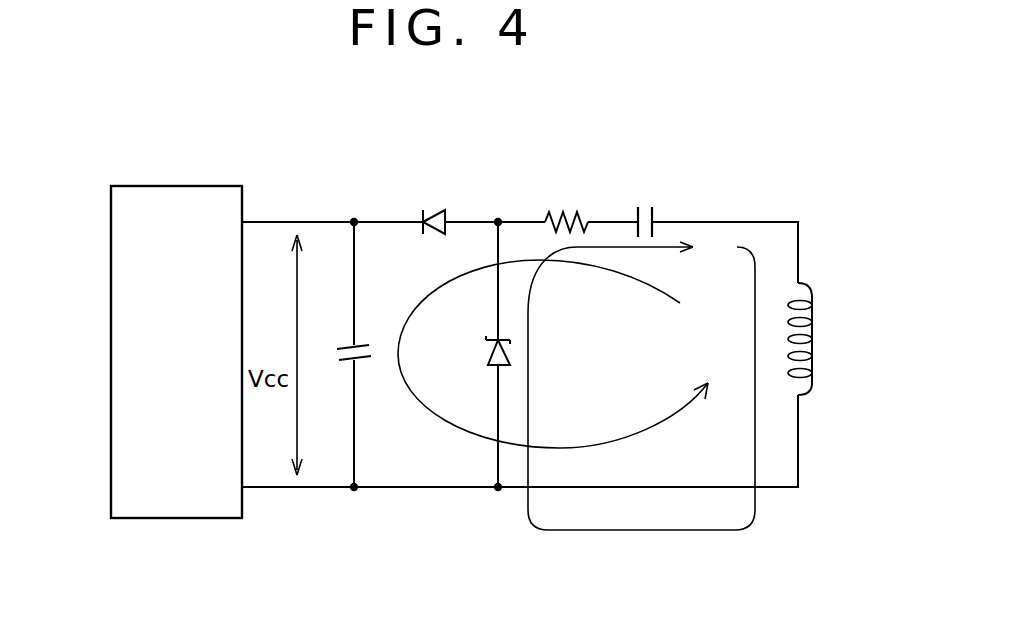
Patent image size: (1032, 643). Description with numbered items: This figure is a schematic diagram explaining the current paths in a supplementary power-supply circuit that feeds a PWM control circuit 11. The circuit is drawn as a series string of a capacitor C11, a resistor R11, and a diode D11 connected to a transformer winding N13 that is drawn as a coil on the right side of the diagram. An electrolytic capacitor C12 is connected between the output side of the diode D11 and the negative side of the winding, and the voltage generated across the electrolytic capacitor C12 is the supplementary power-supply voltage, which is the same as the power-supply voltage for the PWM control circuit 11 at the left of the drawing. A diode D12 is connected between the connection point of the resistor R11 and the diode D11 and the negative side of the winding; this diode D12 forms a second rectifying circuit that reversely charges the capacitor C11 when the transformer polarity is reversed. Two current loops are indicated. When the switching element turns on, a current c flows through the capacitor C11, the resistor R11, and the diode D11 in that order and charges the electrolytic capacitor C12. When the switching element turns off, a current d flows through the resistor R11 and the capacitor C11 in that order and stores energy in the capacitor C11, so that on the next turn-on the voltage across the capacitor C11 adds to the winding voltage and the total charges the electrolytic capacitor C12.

The PWM control circuit 11 is at (111, 305).
The electrolytic capacitor C12 is at (347, 346).
The diode D11 is at (436, 210).
The resistor R11 is at (566, 210).
The capacitor C11 is at (652, 205).
The diode D12 is at (486, 352).
The coil winding N13 is at (812, 320).
The current c is at (422, 398).
The current d is at (625, 530).